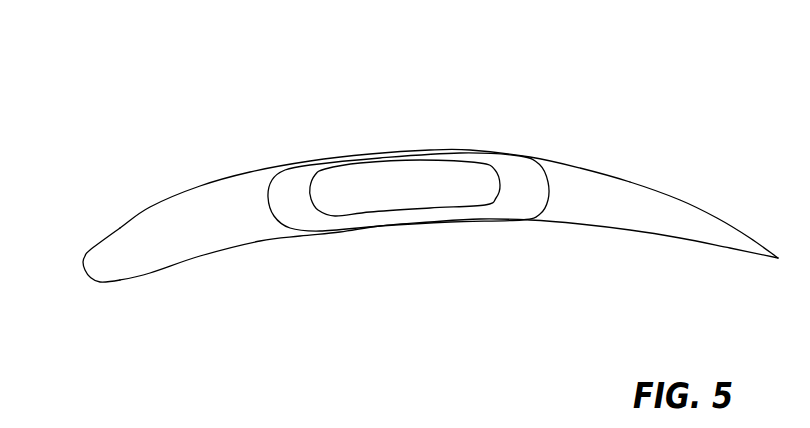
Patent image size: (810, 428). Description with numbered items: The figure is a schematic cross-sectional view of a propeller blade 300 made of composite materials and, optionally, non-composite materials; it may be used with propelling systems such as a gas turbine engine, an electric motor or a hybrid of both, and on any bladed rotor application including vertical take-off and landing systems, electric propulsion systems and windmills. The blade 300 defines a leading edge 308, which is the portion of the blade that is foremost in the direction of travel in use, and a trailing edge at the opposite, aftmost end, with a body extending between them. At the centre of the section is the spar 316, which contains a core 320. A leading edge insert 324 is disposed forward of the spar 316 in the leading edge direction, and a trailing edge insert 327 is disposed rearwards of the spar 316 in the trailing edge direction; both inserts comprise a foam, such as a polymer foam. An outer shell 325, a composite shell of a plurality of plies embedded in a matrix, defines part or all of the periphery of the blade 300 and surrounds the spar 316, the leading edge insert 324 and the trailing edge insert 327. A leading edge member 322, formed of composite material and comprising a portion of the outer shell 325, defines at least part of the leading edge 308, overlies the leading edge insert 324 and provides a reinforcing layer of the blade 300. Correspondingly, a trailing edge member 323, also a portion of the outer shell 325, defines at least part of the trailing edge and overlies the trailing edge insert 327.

The propeller blade 300 is at (205, 71).
The leading edge 308 is at (100, 282).
The spar 316 is at (510, 180).
The core 320 is at (378, 190).
The leading edge member 322 is at (90, 250).
The trailing edge member 323 is at (715, 218).
The leading edge insert 324 is at (210, 207).
The outer shell 325 is at (250, 173).
The trailing edge insert 327 is at (603, 203).